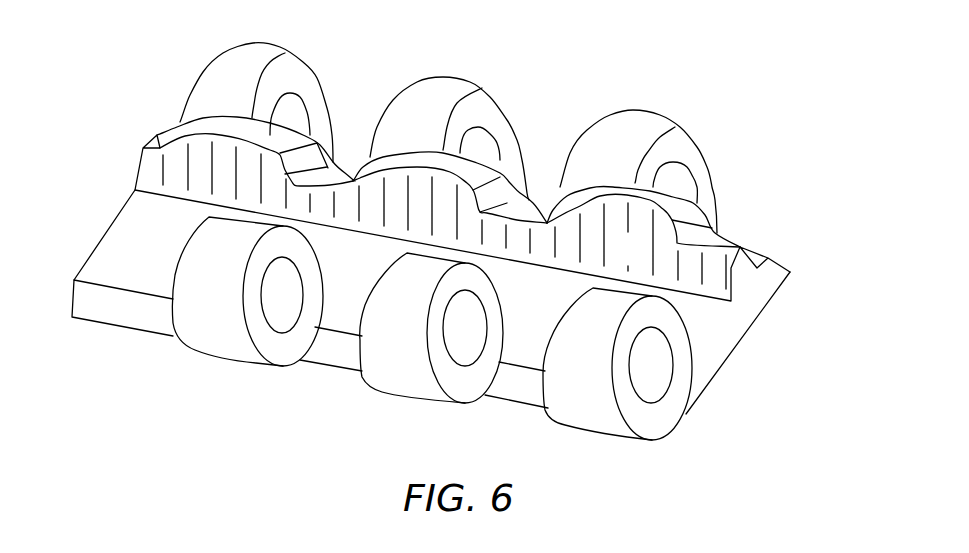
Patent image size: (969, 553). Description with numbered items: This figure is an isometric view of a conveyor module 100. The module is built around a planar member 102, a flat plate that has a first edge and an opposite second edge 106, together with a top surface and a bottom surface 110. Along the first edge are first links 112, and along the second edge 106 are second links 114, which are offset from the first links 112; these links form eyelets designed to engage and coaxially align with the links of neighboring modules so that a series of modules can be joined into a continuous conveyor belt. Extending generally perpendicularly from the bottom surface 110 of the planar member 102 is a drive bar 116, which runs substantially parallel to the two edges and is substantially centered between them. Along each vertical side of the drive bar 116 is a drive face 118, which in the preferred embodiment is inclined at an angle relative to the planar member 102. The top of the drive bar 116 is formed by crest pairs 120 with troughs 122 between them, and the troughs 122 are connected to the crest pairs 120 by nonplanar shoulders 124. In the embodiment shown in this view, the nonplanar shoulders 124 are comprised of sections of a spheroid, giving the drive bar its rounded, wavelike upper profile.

The conveyor module 100 is at (757, 101).
The planar member 102 is at (743, 337).
The second edge 106 is at (513, 393).
The bottom surface 110 is at (126, 252).
The first links 112 is at (638, 110).
The second links 114 is at (600, 422).
The drive bar 116 is at (737, 268).
The drive face 118 is at (646, 262).
The crest pairs 120 is at (448, 181).
The troughs 122 is at (513, 193).
The nonplanar shoulders 124 is at (513, 192).